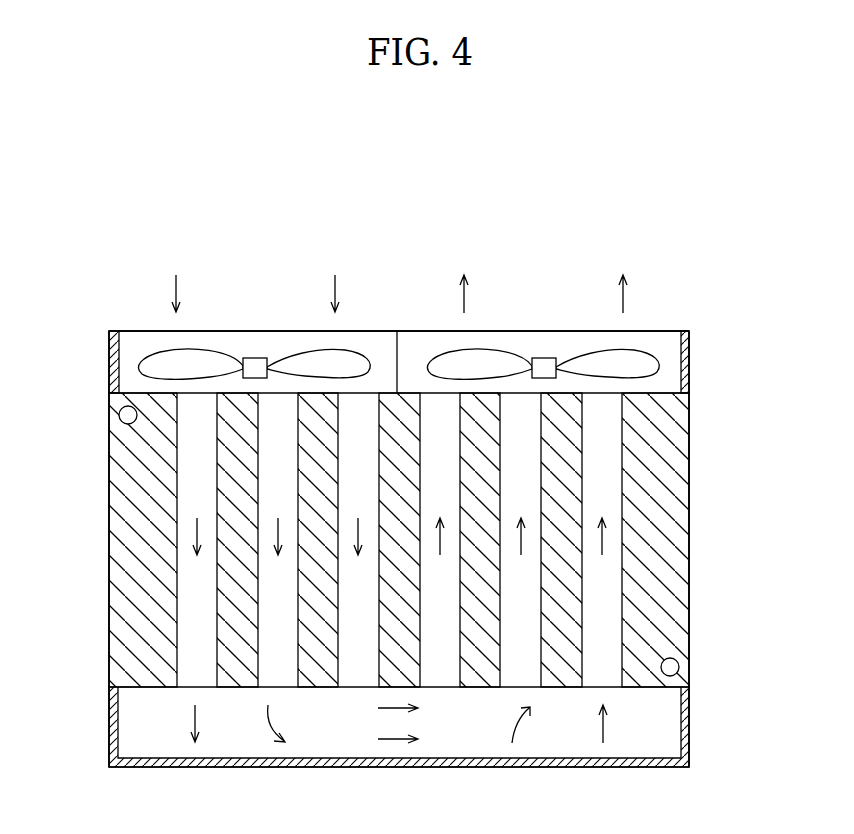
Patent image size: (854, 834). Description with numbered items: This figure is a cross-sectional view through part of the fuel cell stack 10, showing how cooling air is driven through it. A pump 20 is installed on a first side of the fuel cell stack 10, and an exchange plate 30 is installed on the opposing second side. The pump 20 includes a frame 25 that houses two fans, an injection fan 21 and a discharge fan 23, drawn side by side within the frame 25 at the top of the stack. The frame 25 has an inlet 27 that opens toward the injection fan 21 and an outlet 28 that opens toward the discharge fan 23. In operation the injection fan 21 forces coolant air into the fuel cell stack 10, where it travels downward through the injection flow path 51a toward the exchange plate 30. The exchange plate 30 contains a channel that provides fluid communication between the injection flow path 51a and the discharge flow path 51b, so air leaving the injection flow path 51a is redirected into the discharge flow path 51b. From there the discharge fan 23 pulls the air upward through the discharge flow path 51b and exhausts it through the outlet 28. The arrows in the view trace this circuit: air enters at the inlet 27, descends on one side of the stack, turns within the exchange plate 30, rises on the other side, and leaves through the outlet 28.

The fuel cell stack 10 is at (413, 185).
The pump 20 is at (700, 358).
The injection fan 21 is at (219, 360).
The discharge fan 23 is at (565, 361).
The frame 25 is at (681, 349).
The inlet 27 is at (266, 331).
The outlet 28 is at (508, 331).
The exchange plate 30 is at (682, 733).
The injection flow path 51a is at (197, 610).
The discharge flow path 51b is at (603, 612).